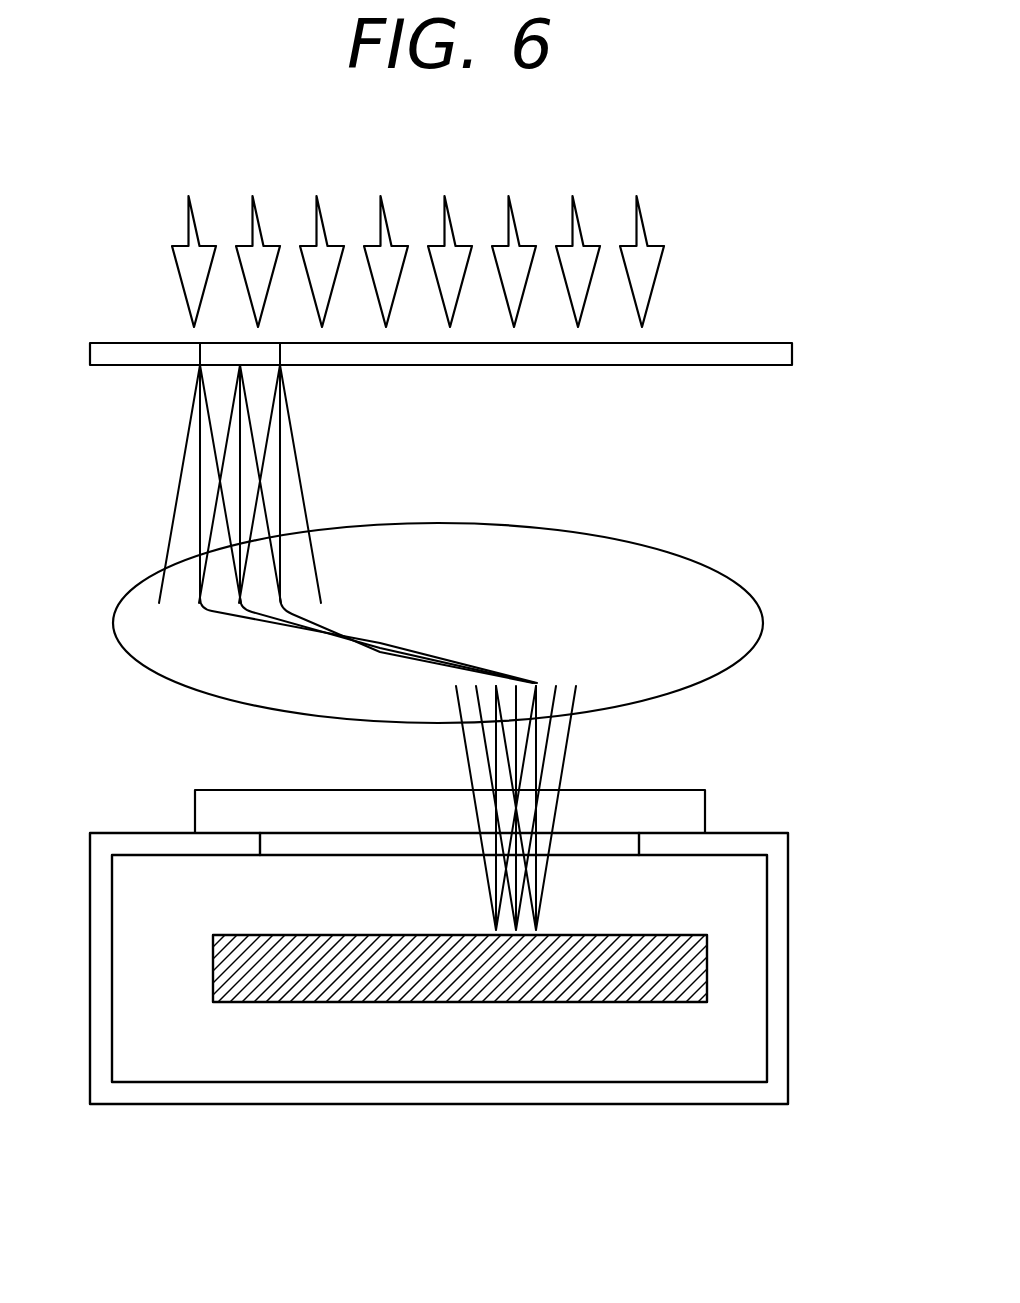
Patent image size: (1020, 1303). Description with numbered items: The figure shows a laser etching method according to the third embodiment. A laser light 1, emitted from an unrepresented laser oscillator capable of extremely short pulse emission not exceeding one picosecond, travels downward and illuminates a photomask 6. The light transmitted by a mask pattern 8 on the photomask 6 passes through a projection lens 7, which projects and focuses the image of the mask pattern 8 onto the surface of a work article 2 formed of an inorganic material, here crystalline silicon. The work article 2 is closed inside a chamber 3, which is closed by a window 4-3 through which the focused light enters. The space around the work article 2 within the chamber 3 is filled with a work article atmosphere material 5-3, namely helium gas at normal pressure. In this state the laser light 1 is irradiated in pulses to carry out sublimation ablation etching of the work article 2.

The laser light 1 is at (646, 215).
The mask pattern 8 is at (228, 344).
The photomask 6 is at (730, 365).
The projection lens 7 is at (735, 612).
The window 4-3 is at (683, 790).
The chamber 3 is at (466, 1093).
The work article atmosphere material 5-3 is at (697, 1065).
The work article 2 is at (695, 968).